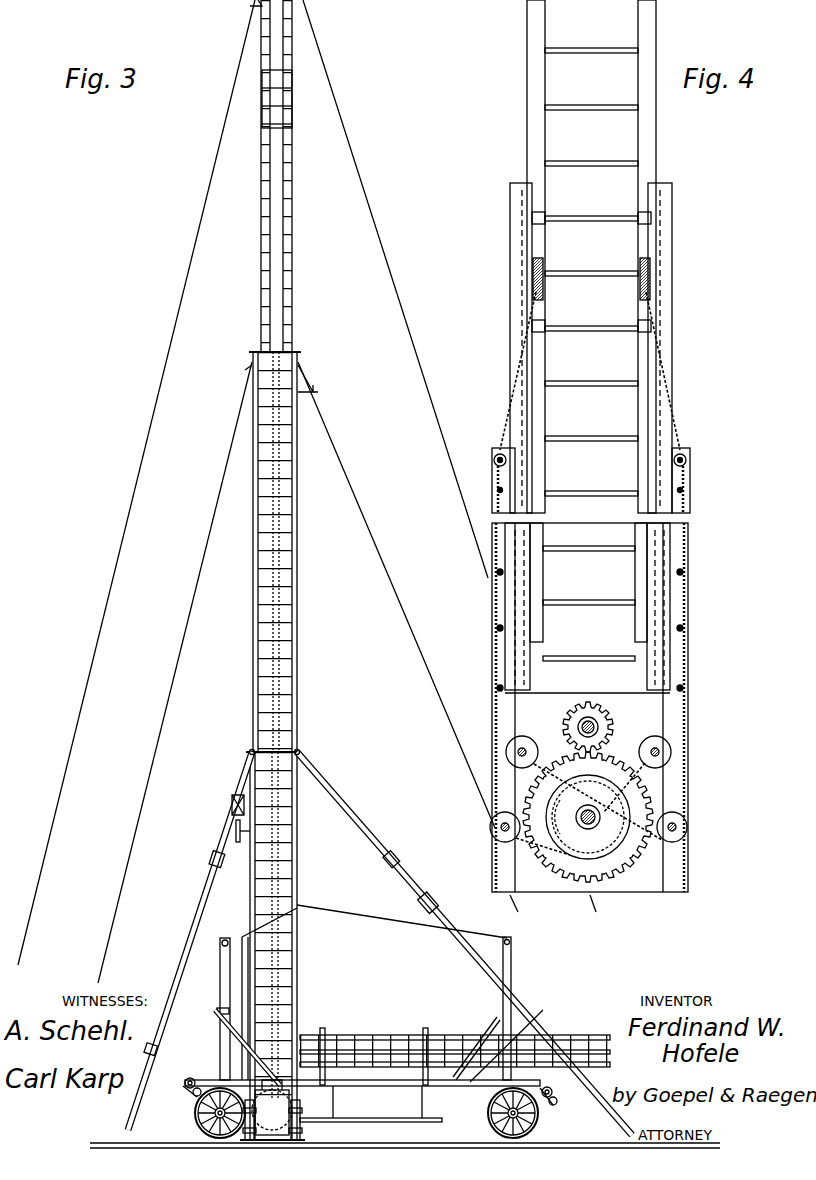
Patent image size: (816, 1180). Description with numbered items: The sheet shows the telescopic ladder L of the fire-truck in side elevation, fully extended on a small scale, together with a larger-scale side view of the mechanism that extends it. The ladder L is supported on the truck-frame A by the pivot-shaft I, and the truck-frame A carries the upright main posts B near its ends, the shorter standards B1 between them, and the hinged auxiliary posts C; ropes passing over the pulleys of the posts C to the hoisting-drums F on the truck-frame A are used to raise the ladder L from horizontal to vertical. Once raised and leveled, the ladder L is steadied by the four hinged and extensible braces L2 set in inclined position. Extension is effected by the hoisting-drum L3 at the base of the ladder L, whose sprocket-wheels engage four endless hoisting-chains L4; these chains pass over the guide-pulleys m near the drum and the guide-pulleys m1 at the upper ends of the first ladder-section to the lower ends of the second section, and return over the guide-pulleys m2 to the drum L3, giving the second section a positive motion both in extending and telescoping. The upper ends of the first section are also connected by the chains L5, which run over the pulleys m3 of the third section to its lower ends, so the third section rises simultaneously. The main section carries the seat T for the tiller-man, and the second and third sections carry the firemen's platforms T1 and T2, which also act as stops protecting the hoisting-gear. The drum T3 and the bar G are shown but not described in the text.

In FIG. 3, the telescopic ladder L is at (277, 570).
In FIG. 3, the hinged and extensible braces L2 is at (380, 943).
In FIG. 4, the hoisting-drum L3 is at (588, 792).
In FIG. 4, the endless hoisting-chains L4 is at (588, 717).
In FIG. 4, the chains L5 is at (512, 368).
In FIG. 3, the seat T is at (238, 800).
In FIG. 3, the firemen's platform T1 is at (296, 672).
In FIG. 3, the firemen's platform T2 is at (258, 4).
In FIG. 3, the winding drum T3 is at (272, 1107).
In FIG. 3, the pivot-shaft I is at (234, 830).
In FIG. 3, the auxiliary posts C is at (378, 992).
In FIG. 3, the upright main posts B is at (538, 1018).
In FIG. 3, the standards B1 is at (455, 1046).
In FIG. 3, the truck-frame A is at (362, 1099).
In FIG. 3, the ground bar G is at (405, 1133).
In FIG. 3, the hoisting-drums F is at (373, 1108).
In FIG. 4, the guide-pulleys m is at (500, 828).
In FIG. 4, the guide-pulleys m1 is at (492, 460).
In FIG. 4, the guide-pulleys m2 is at (588, 779).
In FIG. 4, the pulleys m3 is at (530, 275).